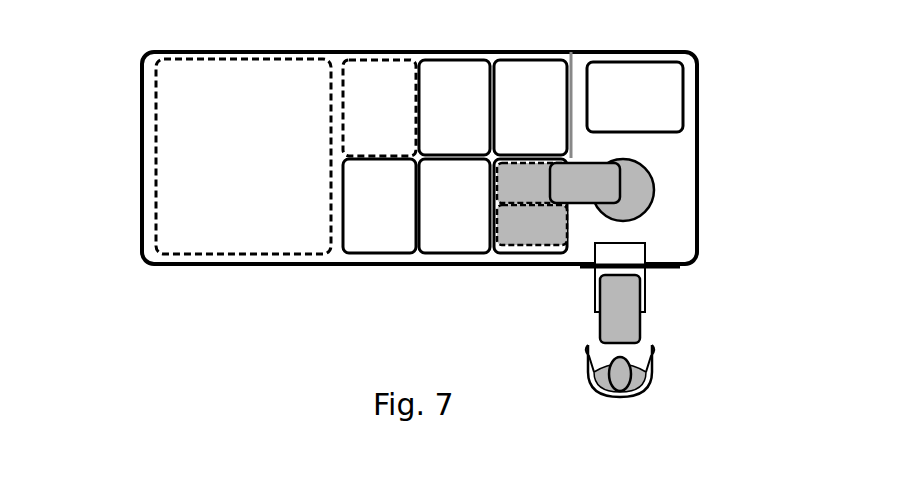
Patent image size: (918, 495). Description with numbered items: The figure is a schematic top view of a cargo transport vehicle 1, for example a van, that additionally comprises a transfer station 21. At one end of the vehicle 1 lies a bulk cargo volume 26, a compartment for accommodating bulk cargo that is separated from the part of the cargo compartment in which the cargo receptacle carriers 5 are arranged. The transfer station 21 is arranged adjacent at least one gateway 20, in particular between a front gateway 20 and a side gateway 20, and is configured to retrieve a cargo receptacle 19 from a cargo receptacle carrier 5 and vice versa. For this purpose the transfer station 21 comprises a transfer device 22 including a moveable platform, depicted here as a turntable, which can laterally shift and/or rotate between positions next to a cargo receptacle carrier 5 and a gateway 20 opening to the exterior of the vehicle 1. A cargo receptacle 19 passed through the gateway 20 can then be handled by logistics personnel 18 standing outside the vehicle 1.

The cargo transport vehicle 1 is at (122, 90).
The cargo receptacle carrier 5 is at (550, 75).
The logistics personnel 18 is at (658, 355).
The cargo receptacle 19 is at (543, 240).
The gateway 20 is at (580, 266).
The transfer station 21 is at (587, 272).
The transfer device 22 is at (632, 197).
The bulk cargo volume 26 is at (192, 193).